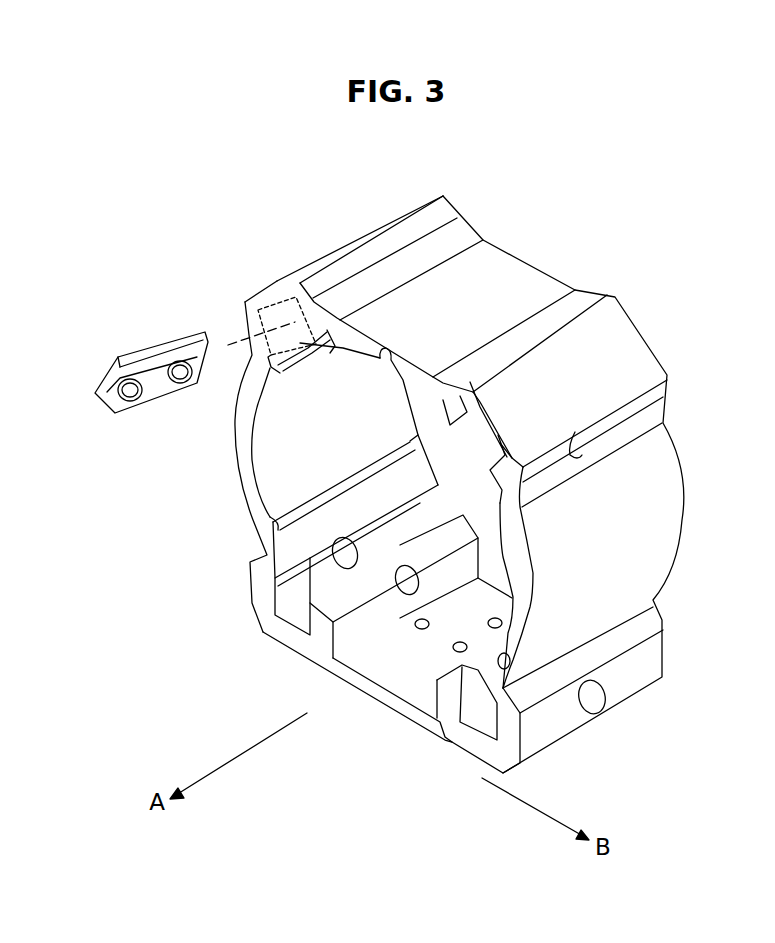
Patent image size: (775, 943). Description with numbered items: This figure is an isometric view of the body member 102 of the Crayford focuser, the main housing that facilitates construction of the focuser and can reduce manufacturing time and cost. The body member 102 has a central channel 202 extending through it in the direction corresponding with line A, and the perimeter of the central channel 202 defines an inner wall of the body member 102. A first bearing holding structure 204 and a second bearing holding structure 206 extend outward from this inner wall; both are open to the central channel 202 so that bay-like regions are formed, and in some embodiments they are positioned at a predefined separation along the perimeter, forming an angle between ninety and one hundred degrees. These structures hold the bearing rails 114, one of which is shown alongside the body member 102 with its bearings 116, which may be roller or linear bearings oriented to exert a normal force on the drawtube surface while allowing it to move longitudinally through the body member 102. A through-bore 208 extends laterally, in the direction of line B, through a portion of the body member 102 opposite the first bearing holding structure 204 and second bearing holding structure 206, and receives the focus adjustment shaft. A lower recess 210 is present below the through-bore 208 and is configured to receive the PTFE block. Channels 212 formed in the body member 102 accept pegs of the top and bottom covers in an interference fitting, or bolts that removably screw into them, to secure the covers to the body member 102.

The body member 102 is at (509, 226).
The bearing rail 114 is at (140, 350).
The bearing 116 is at (130, 400).
The central channel 202 is at (448, 496).
The first bearing holding structure 204 is at (277, 318).
The second bearing holding structure 206 is at (472, 420).
The through-bore 208 is at (340, 560).
The lower recess 210 is at (417, 683).
The channel 212 is at (275, 525).